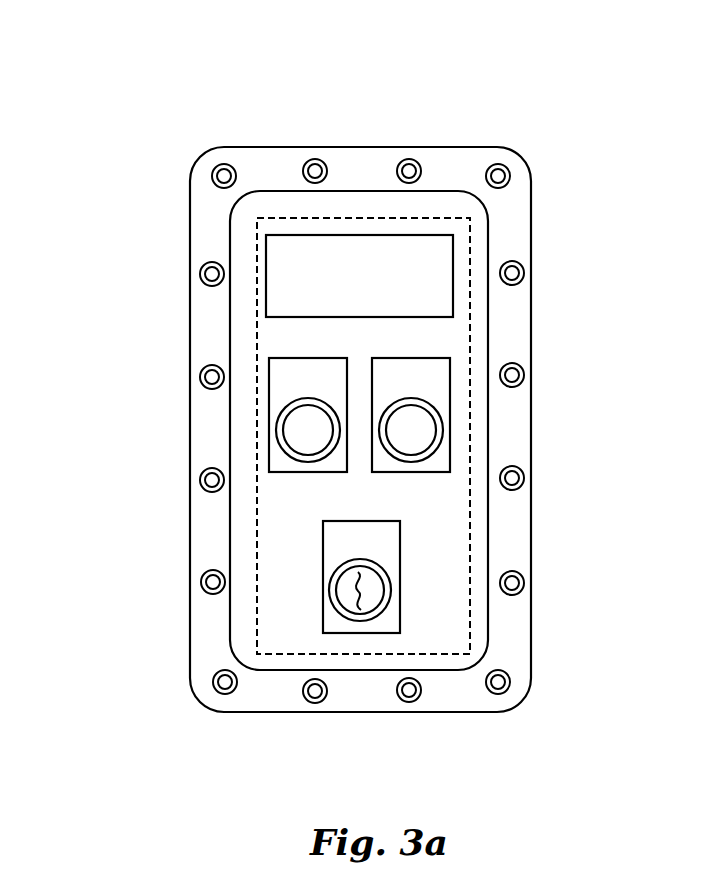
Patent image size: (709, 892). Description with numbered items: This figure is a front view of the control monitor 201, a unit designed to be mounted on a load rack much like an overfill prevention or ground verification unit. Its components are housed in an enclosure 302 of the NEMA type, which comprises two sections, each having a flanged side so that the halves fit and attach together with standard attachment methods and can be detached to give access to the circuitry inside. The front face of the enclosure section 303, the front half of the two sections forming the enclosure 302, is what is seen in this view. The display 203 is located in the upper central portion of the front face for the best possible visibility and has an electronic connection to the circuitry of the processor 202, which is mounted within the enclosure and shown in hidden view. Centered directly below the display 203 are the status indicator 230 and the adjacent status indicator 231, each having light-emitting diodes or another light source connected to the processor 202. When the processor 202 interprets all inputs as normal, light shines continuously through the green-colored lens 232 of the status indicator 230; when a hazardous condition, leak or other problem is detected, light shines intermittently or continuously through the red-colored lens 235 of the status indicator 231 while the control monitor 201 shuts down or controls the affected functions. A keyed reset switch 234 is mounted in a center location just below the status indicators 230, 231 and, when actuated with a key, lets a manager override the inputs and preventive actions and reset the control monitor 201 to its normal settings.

The control monitor 201 is at (368, 110).
The processor 202 is at (257, 343).
The display 203 is at (293, 233).
The status indicator 230 is at (270, 407).
The status indicator 231 is at (450, 412).
The green-colored lens 232 is at (308, 462).
The keyed reset switch 234 is at (400, 598).
The red-colored lens 235 is at (411, 462).
The enclosure 302 is at (467, 148).
The enclosure section 303 is at (532, 238).